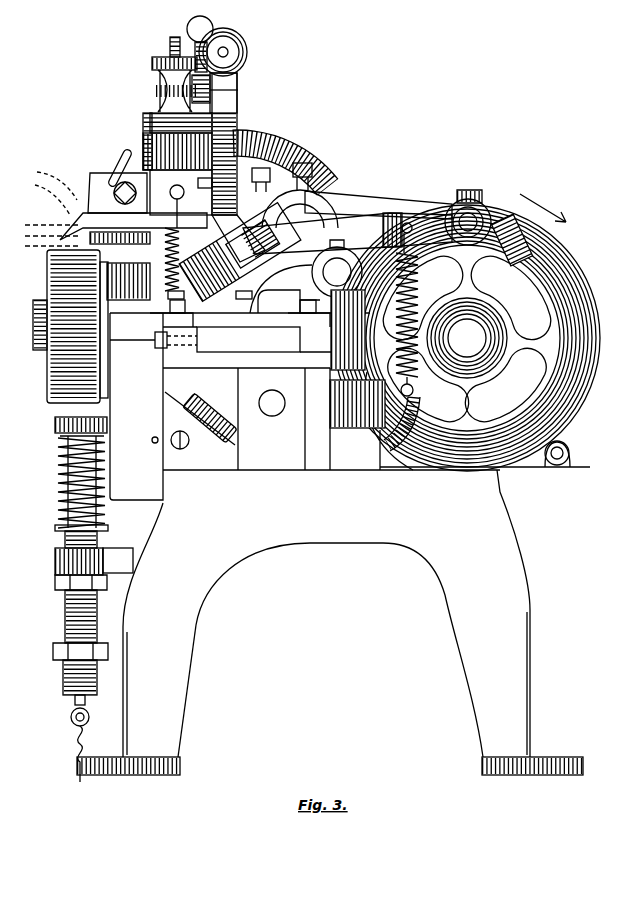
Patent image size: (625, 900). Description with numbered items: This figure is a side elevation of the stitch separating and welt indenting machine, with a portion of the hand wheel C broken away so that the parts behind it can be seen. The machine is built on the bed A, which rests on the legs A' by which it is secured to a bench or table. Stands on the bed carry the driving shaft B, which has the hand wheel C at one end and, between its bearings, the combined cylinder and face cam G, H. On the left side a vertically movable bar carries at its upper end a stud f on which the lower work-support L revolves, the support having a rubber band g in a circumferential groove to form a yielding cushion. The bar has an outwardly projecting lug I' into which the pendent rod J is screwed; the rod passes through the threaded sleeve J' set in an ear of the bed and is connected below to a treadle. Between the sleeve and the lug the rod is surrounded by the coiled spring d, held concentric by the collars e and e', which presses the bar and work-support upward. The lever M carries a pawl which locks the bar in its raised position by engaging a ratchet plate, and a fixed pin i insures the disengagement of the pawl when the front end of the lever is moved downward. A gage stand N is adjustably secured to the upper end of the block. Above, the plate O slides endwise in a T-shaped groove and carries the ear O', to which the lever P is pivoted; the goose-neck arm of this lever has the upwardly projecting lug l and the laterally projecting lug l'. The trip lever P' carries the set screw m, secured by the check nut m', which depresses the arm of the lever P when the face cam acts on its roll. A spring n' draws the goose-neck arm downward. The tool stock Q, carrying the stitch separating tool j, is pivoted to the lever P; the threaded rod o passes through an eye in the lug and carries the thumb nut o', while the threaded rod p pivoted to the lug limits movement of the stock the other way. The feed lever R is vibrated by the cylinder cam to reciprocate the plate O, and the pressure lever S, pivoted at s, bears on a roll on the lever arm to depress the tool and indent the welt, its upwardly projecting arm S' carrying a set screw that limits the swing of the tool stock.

The bed A is at (330, 544).
The legs A' is at (509, 613).
The driving shaft B is at (467, 338).
The hand wheel C is at (467, 332).
The cylinder cam G is at (446, 244).
The face cam H is at (467, 339).
The outwardly projecting lug I' is at (72, 424).
The pendent rod J is at (76, 712).
The threaded sleeve J' is at (69, 616).
The lower work-support L is at (47, 282).
The lever M is at (275, 414).
The gage stand N is at (116, 236).
The plate O is at (220, 326).
The ear O' is at (272, 291).
The lever P is at (240, 187).
The trip lever P' is at (347, 212).
The tool stock Q is at (135, 172).
The feed lever R is at (366, 316).
The pressure lever S is at (362, 185).
The upwardly projecting arm S' is at (349, 123).
The coiled spring d is at (74, 482).
The collar e is at (74, 533).
The collar e' is at (71, 445).
The stud f is at (32, 325).
The rubber band g is at (83, 326).
The pin i is at (149, 440).
The stitch separating tool j is at (115, 166).
The upwardly projecting lug l is at (223, 93).
The laterally projecting lug l' is at (177, 164).
The set screw m is at (272, 179).
The check nut m' is at (300, 209).
The spring n' is at (197, 236).
The threaded rod o is at (227, 47).
The thumb nut o' is at (242, 51).
The threaded rod p is at (222, 89).
The fulcrum pin s is at (302, 189).